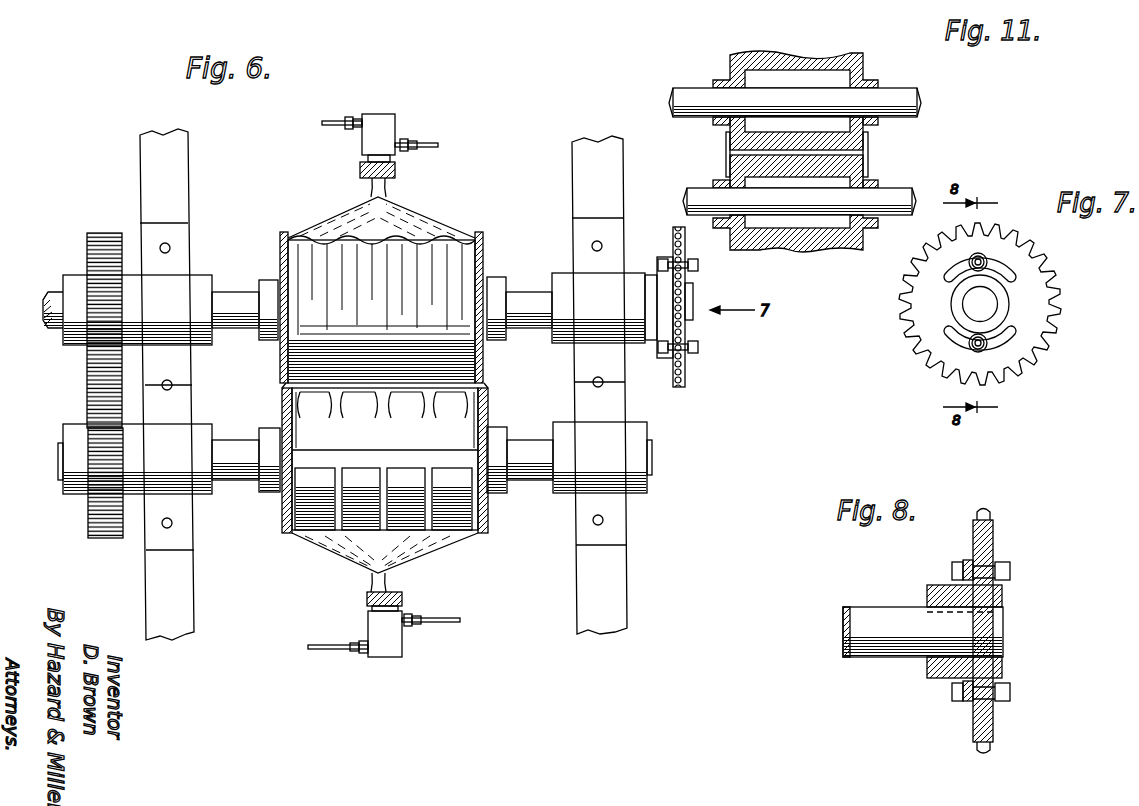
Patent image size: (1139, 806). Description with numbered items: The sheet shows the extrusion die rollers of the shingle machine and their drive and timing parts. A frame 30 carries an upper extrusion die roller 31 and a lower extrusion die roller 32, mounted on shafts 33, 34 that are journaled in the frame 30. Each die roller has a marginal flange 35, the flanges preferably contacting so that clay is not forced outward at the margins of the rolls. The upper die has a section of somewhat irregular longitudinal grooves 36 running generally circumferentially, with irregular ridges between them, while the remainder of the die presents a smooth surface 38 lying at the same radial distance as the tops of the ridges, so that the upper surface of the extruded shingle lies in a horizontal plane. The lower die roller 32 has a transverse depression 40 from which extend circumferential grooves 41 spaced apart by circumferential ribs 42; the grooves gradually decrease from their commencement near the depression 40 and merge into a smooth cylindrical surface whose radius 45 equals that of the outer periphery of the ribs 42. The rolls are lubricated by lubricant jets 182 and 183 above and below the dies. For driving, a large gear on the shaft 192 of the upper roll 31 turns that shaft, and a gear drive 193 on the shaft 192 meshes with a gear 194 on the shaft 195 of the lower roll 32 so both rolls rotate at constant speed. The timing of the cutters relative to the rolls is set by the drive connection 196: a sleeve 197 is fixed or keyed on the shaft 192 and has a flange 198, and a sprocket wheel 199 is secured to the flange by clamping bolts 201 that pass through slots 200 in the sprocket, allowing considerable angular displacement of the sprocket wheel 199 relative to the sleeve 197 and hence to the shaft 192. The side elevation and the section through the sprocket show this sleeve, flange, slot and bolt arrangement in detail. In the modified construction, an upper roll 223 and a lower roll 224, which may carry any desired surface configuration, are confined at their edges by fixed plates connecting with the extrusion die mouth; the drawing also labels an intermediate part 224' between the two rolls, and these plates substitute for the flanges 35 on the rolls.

In FIG. 6, the frame 30 is at (138, 192).
In FIG. 6, the upper extrusion die roller 31 is at (359, 287).
In FIG. 6, the lower extrusion die roller 32 is at (440, 535).
In FIG. 6, the shaft 33 is at (512, 300).
In FIG. 6, the shaft 34 is at (540, 455).
In FIG. 6, the marginal flange 35 is at (480, 403).
In FIG. 6, the longitudinal grooves 36 is at (325, 237).
In FIG. 6, the smooth surface 38 is at (282, 365).
In FIG. 6, the transverse depression 40 is at (388, 458).
In FIG. 6, the circumferential grooves 41 is at (420, 403).
In FIG. 6, the circumferential ribs 42 is at (318, 410).
In FIG. 6, the radius 45 is at (303, 437).
In FIG. 6, the lubricant jet 182 is at (380, 134).
In FIG. 6, the lubricant jet 183 is at (383, 637).
In FIG. 6, the shaft 192 is at (233, 303).
In FIG. 8, the shaft 192 is at (985, 632).
In FIG. 6, the gear drive 193 is at (93, 362).
In FIG. 6, the gear 194 is at (93, 517).
In FIG. 6, the shaft 195 is at (235, 462).
In FIG. 6, the drive connection 196 is at (693, 362).
In FIG. 7, the drive connection 196 is at (1053, 276).
In FIG. 8, the drive connection 196 is at (1017, 631).
In FIG. 6, the sleeve 197 is at (661, 283).
In FIG. 8, the sleeve 197 is at (940, 597).
In FIG. 6, the flange 198 is at (674, 262).
In FIG. 8, the flange 198 is at (968, 700).
In FIG. 7, the sprocket wheel 199 is at (1033, 299).
In FIG. 8, the sprocket wheel 199 is at (992, 550).
In FIG. 6, the slots 200 is at (688, 383).
In FIG. 7, the slots 200 is at (1005, 335).
In FIG. 6, the clamping bolts 201 is at (690, 350).
In FIG. 7, the clamping bolts 201 is at (985, 345).
In FIG. 8, the clamping bolts 201 is at (955, 565).
In FIG. 11, the upper roll 223 is at (866, 73).
In FIG. 11, the intermediate bearing block 224' is at (833, 147).
In FIG. 11, the lower roll 224 is at (823, 171).